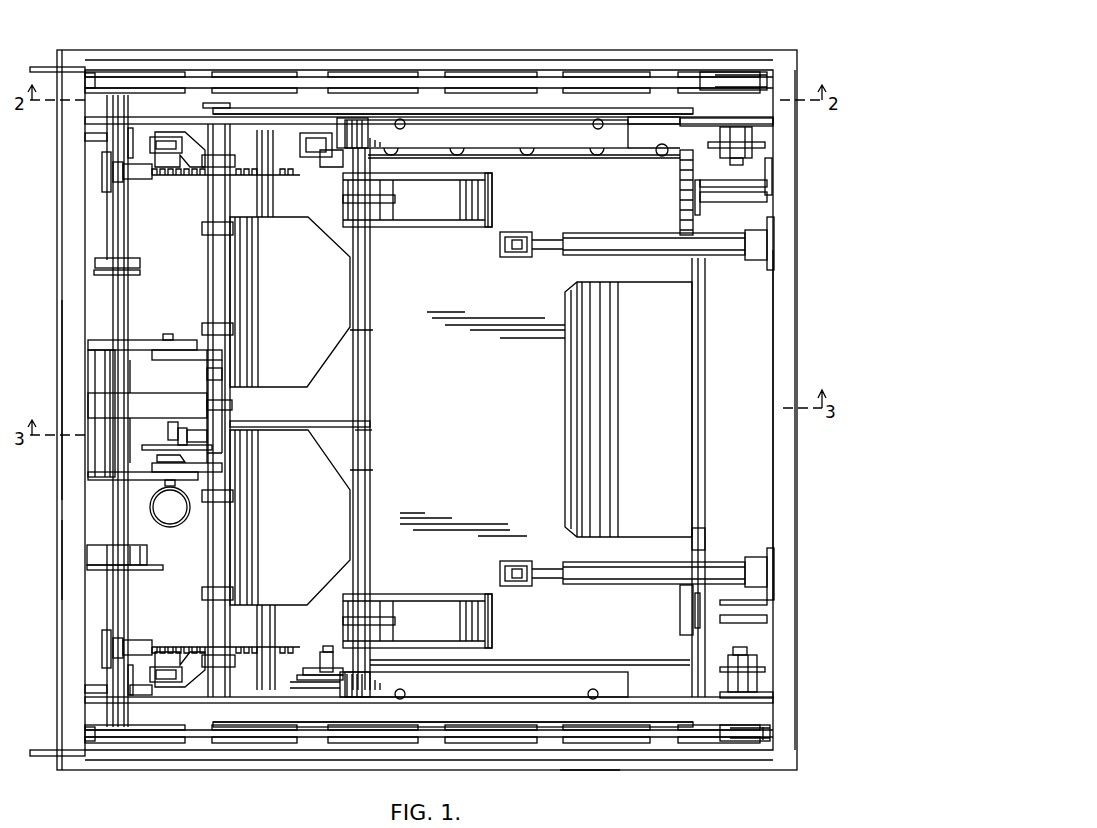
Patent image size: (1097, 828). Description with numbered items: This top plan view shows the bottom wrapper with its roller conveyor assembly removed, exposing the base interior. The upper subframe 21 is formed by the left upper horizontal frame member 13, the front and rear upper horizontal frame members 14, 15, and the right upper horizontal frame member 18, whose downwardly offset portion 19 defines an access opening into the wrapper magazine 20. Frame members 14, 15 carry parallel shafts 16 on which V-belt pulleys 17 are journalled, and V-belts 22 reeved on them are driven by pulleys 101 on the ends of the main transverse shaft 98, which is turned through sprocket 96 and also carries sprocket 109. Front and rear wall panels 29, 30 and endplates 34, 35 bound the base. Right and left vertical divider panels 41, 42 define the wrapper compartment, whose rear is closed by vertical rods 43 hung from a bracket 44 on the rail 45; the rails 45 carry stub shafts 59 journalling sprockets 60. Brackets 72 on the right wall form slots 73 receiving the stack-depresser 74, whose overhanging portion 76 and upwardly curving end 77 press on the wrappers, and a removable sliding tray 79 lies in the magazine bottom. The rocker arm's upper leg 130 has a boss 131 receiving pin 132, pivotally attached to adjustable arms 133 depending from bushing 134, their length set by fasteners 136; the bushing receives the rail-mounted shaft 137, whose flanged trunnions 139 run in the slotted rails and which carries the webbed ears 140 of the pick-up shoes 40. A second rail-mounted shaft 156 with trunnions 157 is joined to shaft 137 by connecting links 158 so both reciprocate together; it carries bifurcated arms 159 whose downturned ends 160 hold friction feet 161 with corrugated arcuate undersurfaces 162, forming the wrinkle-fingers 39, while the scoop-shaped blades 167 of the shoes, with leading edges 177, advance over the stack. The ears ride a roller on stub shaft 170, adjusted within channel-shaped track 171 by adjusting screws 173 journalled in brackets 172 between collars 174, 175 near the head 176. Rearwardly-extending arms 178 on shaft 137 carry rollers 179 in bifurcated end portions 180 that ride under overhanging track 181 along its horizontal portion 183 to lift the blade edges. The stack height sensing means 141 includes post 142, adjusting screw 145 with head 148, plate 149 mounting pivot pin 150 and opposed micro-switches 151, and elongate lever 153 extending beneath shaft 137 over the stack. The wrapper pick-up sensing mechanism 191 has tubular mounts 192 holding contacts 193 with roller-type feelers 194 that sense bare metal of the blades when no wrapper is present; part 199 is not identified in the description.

The upper horizontal frame member 13 is at (72, 518).
The front upper horizontal frame member 14 is at (526, 760).
The rear upper horizontal frame member 15 is at (473, 60).
The shafts 16 is at (505, 67).
The V-belt pulleys 17 is at (300, 70).
The upper horizontal frame member 18 is at (778, 72).
The downwardly offset portion 19 is at (797, 495).
The wrapper magazine 20 is at (468, 500).
The upper subframe 21 is at (600, 40).
The V-belts 22 is at (435, 735).
The front wall panel 29 is at (586, 766).
The rear wall panel 30 is at (430, 50).
The left endwall 34 is at (62, 577).
The endplate 35 is at (797, 332).
The wrinkle-fingers 39 is at (492, 200).
The pick-up shoes 40 is at (290, 411).
The right vertical divider panel 41 is at (710, 540).
The left vertical divider panel 42 is at (482, 424).
The vertical rods 43 is at (535, 147).
The bracket 44 is at (637, 150).
The rail 45 is at (633, 122).
The stub shafts 59 is at (745, 165).
The sprockets 60 is at (762, 118).
The brackets 72 is at (706, 298).
The slots 73 is at (707, 268).
The stack-depresser 74 is at (628, 409).
The overhanging portion 76 is at (642, 305).
The upwardly curving end 77 is at (598, 440).
The sliding tray 79 is at (614, 624).
The sprocket 96 is at (163, 565).
The main transverse shaft 98 is at (125, 227).
The pulleys 101 is at (90, 75).
The sprocket 109 is at (135, 272).
The upper leg 130 is at (132, 410).
The boss 131 is at (92, 405).
The pin 132 is at (92, 363).
The adjustable arms 133 is at (196, 345).
The bushing 134 is at (212, 380).
The fasteners 136 is at (165, 335).
The rail-mounted shaft 137 is at (210, 256).
The flanged trunnions 139 is at (198, 117).
The webbed ears 140 is at (232, 240).
The stack height sensing means 141 is at (377, 405).
The post 142 is at (142, 448).
The adjusting screw 145 is at (180, 515).
The head 148 is at (160, 508).
The plate 149 is at (200, 470).
The pivot pin 150 is at (167, 431).
The micro-switches 151 is at (200, 438).
The elongate lever 153 is at (305, 421).
The second rail-mounted shaft 156 is at (370, 295).
The flanged trunnions 157 is at (368, 120).
The connecting links 158 is at (283, 111).
The bifurcated arms 159 is at (425, 228).
The downturned ends 160 is at (472, 212).
The friction feet 161 is at (492, 210).
The corrugated arcuate undersurfaces 162 is at (492, 182).
The scoop-shaped blades 167 is at (382, 440).
The stub shaft 170 is at (275, 625).
The channel-shaped track 171 is at (292, 160).
The brackets 172 is at (128, 140).
The adjusting screws 173 is at (277, 175).
The collar 174 is at (135, 180).
The collar 175 is at (113, 180).
The head 176 is at (102, 165).
The leading edges 177 is at (371, 345).
The rearwardly-extending arms 178 is at (190, 160).
The rollers 179 is at (148, 147).
The bifurcated end portions 180 is at (170, 698).
The overhanging track 181 is at (362, 110).
The horizontal portion 183 is at (440, 135).
The wrapper pick-up sensing mechanism 191 is at (552, 262).
The tubular mounts 192 is at (597, 256).
The contact 193 is at (552, 240).
The roller-type feeler 194 is at (505, 257).
The tab 199 is at (50, 67).